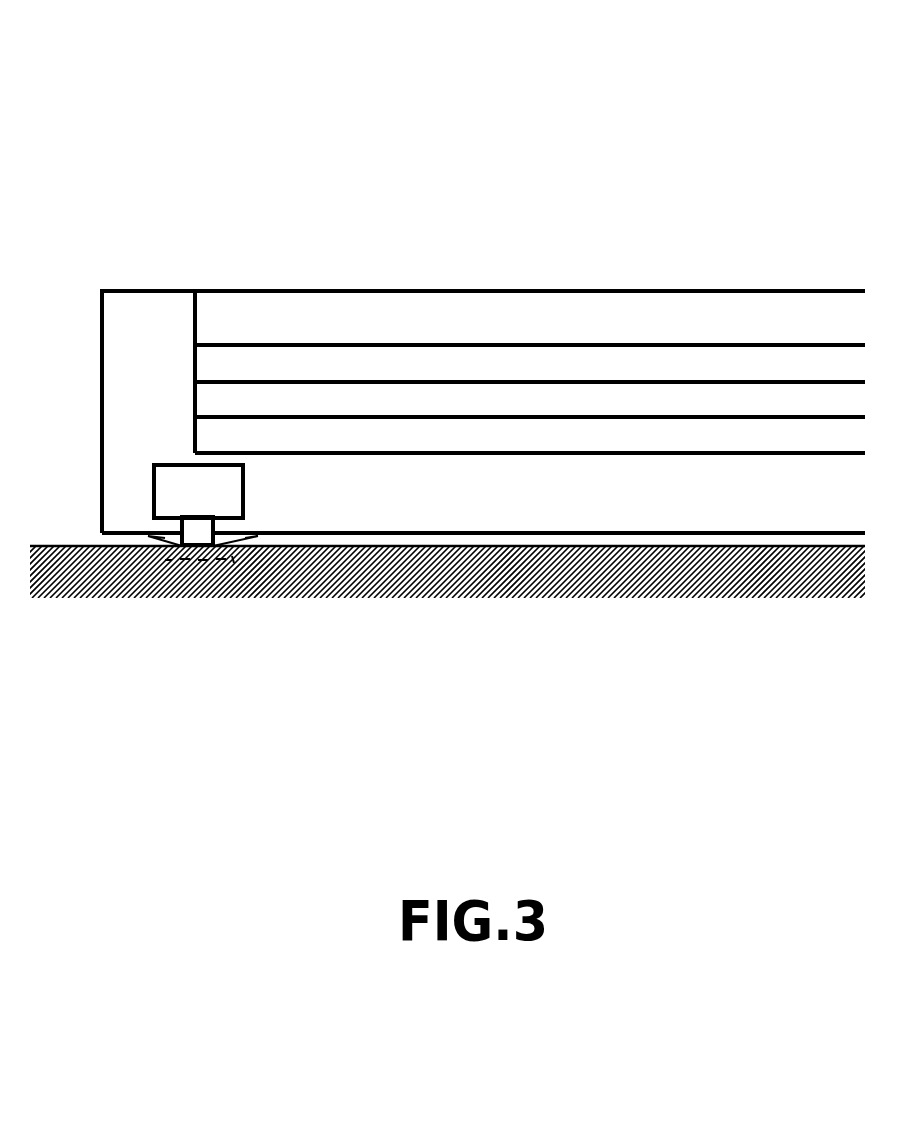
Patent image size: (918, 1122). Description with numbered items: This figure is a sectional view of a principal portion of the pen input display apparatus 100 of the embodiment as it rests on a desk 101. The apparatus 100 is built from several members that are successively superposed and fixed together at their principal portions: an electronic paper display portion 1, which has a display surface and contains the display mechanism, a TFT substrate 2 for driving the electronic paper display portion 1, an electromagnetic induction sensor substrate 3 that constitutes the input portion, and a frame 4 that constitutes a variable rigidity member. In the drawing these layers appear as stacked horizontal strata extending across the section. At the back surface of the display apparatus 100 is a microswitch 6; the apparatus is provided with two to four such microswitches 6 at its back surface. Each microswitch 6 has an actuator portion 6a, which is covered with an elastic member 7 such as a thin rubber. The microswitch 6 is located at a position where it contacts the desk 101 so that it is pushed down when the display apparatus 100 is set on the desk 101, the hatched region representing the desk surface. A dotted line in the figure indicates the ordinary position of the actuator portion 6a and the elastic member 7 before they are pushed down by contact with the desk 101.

The pen input display apparatus 100 is at (147, 291).
The electronic paper display portion 1 is at (248, 320).
The TFT substrate 2 is at (312, 370).
The electromagnetic induction sensor substrate 3 is at (393, 405).
The frame 4 is at (480, 437).
The microswitch 6 is at (173, 478).
The actuator portion 6a is at (193, 535).
The elastic member 7 is at (117, 573).
The desk 101 is at (787, 572).